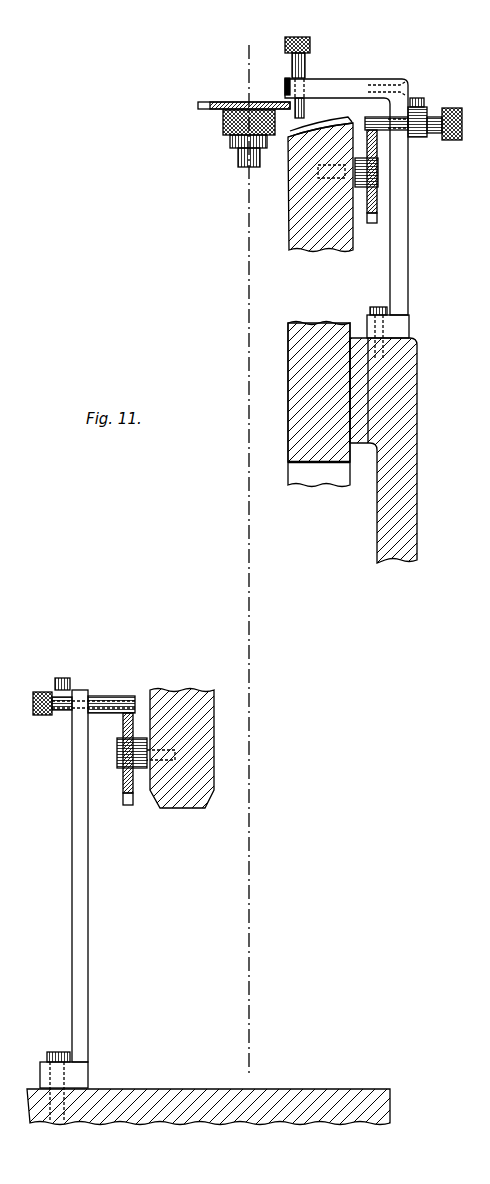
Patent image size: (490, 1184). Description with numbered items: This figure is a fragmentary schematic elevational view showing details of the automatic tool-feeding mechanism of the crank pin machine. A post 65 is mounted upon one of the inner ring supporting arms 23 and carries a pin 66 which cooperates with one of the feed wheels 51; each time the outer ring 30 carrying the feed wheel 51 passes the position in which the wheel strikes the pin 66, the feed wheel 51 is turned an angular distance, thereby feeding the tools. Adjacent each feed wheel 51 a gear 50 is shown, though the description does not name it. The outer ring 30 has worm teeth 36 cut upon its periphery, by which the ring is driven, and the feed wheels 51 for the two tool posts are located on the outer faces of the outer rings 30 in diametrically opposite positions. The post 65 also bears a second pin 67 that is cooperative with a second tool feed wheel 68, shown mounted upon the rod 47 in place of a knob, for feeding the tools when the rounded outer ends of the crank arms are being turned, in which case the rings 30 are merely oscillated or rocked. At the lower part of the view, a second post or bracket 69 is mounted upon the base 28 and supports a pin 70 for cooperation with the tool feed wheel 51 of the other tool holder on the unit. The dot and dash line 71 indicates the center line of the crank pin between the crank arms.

The inner ring supporting arm 23 is at (416, 458).
The base 28 is at (160, 1090).
The outer ring 30 is at (290, 212).
The worm teeth 36 is at (322, 128).
The rod 47 is at (238, 162).
The gear 50 is at (330, 186).
The feed wheel 51 is at (380, 205).
The post 65 is at (404, 256).
The pin 66 is at (450, 110).
The second pin 67 is at (306, 68).
The second tool feed wheel 68 is at (220, 102).
The second post or bracket 69 is at (88, 905).
The pin 70 is at (100, 697).
The center line 71 is at (247, 530).